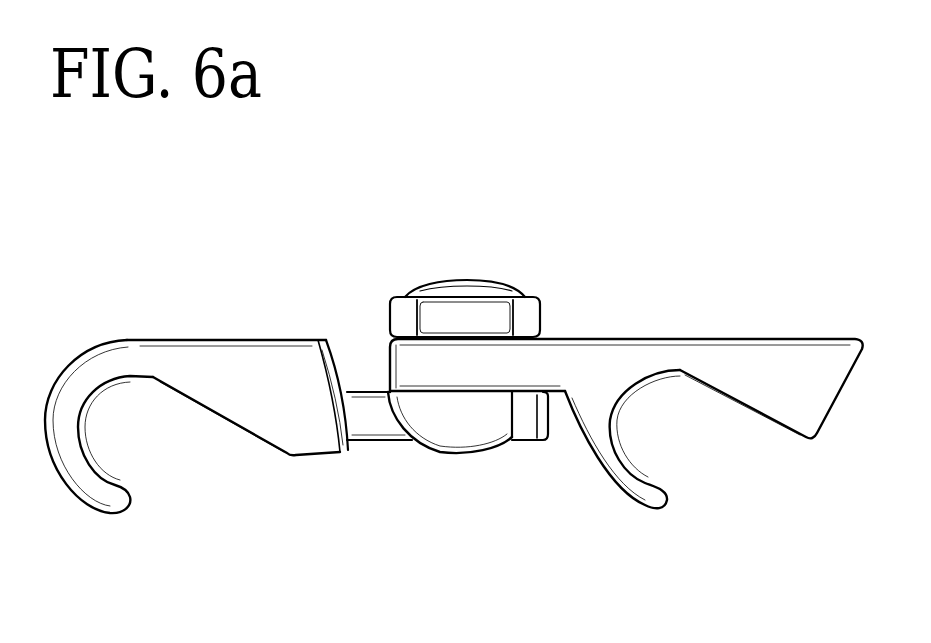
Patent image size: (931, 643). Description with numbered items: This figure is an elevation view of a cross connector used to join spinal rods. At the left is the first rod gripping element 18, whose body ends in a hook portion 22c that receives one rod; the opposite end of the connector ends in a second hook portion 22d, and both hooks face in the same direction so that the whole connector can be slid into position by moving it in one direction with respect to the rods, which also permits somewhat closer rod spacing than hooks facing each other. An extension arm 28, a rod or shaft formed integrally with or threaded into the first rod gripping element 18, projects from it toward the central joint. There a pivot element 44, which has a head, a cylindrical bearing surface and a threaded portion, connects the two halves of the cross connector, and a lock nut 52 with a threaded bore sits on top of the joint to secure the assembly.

The first rod gripping element 18 is at (180, 340).
The hook portion 22c is at (125, 513).
The hook portion 22d is at (661, 508).
The extension arm 28 is at (376, 441).
The pivot element 44 is at (470, 456).
The lock nut 52 is at (544, 313).